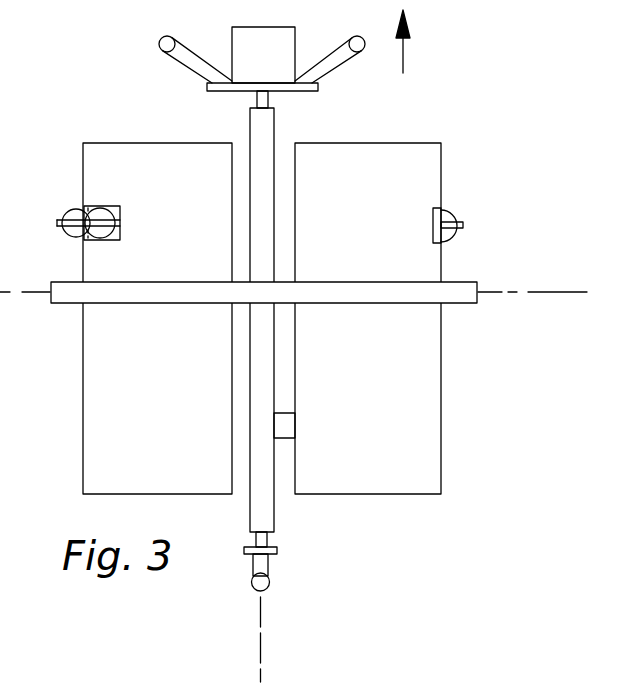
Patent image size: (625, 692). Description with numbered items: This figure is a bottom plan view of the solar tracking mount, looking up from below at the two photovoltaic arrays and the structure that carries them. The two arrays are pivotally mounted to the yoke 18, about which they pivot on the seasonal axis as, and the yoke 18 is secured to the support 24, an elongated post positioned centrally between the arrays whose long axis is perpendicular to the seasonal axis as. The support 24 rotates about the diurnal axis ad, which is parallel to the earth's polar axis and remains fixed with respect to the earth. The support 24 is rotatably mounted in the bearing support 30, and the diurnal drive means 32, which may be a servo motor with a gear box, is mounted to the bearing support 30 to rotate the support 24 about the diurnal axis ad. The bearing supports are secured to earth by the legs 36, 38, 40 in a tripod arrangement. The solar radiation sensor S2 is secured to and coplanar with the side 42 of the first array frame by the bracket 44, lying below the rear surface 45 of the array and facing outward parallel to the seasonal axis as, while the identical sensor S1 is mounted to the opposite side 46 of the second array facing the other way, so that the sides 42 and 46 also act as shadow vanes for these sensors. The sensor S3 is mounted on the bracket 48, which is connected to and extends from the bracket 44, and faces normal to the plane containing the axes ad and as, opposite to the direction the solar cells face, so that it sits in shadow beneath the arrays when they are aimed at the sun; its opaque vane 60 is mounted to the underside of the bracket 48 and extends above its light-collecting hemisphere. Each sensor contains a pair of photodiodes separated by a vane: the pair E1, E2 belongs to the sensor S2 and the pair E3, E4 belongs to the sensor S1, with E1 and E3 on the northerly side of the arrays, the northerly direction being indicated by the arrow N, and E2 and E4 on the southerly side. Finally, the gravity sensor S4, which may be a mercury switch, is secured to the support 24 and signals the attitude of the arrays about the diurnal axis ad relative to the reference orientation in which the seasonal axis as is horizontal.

The yoke 18 is at (353, 283).
The support 24 is at (275, 497).
The bearing support 30 is at (227, 91).
The diurnal drive means 32 is at (290, 40).
The leg 36 is at (270, 568).
The leg 38 is at (333, 65).
The leg 40 is at (183, 58).
The side of array frame 42 is at (83, 408).
The bracket 44 is at (96, 240).
The rear surface of array 45 is at (176, 399).
The side of array frame 46 is at (441, 425).
The bracket 48 is at (120, 210).
The vane 60 is at (116, 230).
The solar radiation sensor S1 is at (460, 222).
The solar radiation sensor S2 is at (68, 214).
The solar radiation sensor S3 is at (100, 208).
The gravity sensor S4 is at (288, 428).
The photodiode sensor E1 is at (77, 209).
The photodiode sensor E2 is at (72, 235).
The photodiode sensor E3 is at (450, 215).
The photodiode sensor E4 is at (452, 238).
The diurnal axis ad is at (545, 292).
The seasonal axis as is at (260, 628).
The north direction N is at (414, 39).